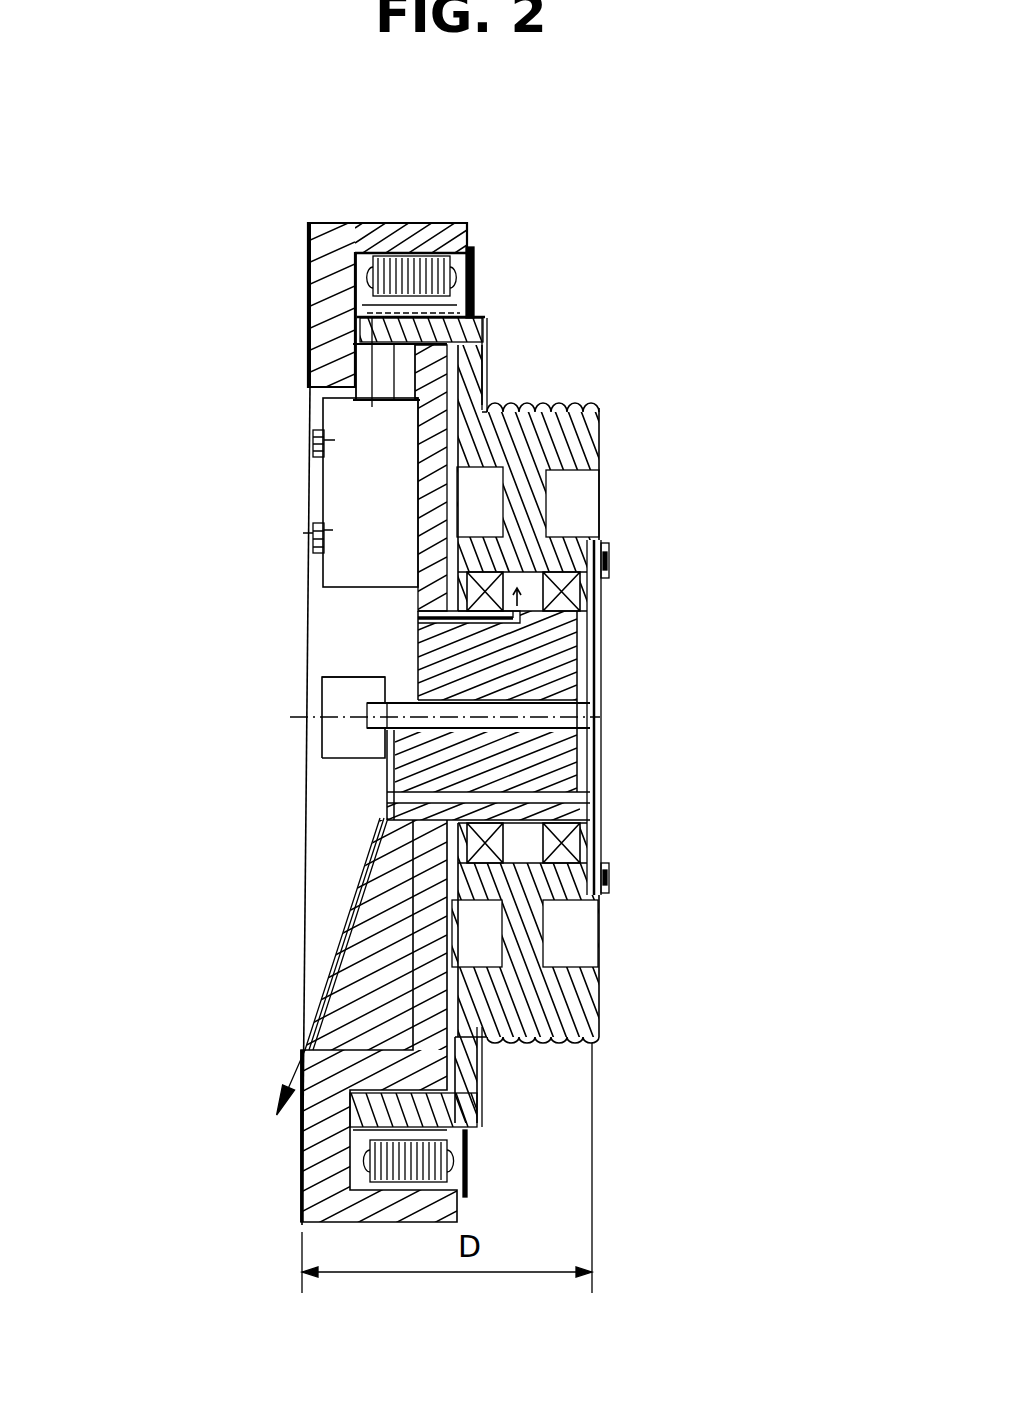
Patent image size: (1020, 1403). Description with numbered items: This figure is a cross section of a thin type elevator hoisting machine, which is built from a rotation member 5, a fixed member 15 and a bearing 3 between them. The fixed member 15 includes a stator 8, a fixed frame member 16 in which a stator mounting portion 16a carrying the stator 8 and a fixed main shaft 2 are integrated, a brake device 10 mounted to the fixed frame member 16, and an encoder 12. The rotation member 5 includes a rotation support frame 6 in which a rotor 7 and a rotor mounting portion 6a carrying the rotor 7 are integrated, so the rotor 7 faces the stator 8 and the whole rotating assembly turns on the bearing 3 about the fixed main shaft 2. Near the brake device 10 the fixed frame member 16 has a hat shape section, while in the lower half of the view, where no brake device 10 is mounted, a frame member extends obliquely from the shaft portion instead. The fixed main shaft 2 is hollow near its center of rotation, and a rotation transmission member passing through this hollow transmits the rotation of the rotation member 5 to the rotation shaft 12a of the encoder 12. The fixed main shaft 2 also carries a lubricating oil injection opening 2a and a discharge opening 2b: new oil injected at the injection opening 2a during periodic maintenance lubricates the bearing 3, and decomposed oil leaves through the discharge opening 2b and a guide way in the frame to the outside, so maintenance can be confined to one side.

The fixed main shaft 2 is at (593, 755).
The lubricating oil injection opening 2a is at (417, 640).
The lubricating warm water discharge opening 2b is at (382, 818).
The bearing 3 is at (578, 597).
The rotation member 5 is at (488, 364).
The rotation support frame 6 is at (477, 330).
The rotor mounting portion 6a is at (372, 313).
The rotor 7 is at (478, 300).
The stator 8 is at (463, 242).
The brake device 10 is at (355, 568).
The encoder 12 is at (333, 748).
The rotation shaft 12a is at (322, 690).
The fixed member 15 is at (300, 1157).
The fixed frame member 16 is at (430, 508).
The stator mounting portion 16a is at (428, 232).